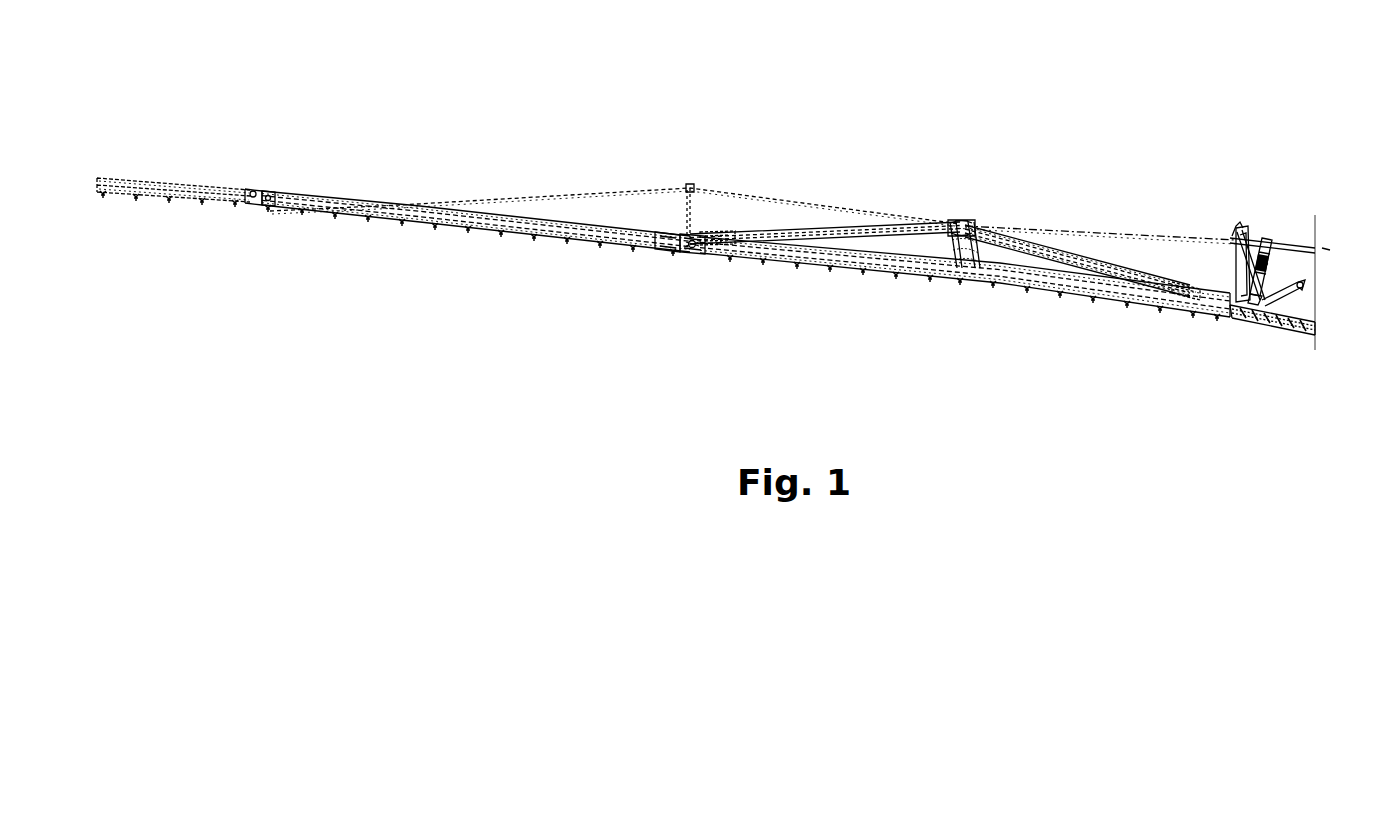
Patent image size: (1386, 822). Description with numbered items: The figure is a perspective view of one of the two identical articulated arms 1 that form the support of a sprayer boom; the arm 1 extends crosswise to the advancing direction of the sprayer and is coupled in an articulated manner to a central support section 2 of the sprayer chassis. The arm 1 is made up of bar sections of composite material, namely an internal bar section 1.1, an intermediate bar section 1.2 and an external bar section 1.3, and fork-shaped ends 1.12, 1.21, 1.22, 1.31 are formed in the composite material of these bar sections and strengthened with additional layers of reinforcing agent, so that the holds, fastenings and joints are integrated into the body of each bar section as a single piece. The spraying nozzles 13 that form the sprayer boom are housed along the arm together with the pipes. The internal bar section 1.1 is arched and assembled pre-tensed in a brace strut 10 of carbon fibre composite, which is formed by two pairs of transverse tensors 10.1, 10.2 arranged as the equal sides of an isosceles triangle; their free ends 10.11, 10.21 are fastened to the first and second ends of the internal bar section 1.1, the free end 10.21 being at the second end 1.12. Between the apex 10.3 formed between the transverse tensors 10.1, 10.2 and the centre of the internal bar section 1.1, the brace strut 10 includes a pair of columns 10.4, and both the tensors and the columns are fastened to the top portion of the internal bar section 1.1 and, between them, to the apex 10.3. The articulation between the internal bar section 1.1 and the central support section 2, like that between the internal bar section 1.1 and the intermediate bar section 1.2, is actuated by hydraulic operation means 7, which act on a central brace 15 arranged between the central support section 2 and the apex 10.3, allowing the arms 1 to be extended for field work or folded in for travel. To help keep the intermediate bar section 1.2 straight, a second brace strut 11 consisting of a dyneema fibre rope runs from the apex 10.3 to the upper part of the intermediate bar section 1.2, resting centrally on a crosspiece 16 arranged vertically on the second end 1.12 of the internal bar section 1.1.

The articulated arm 1 is at (796, 88).
The internal bar section 1.1 is at (1013, 281).
The intermediate bar section 1.2 is at (385, 219).
The external bar section 1.3 is at (121, 186).
The second end of the internal bar section 1.12 is at (691, 248).
The fork-shaped end of the intermediate bar section 1.21 is at (662, 246).
The fork-shaped end of the intermediate bar section 1.22 is at (263, 196).
The fork-shaped end of the external bar section 1.31 is at (240, 193).
The central support section 2 is at (1313, 260).
The hydraulic operation means 7 is at (1268, 240).
The brace strut 10 is at (924, 192).
The transverse tensor 10.1 is at (1063, 248).
The free end of the transverse tensor 10.11 is at (1186, 291).
The transverse tensor 10.2 is at (845, 228).
The free end of the transverse tensor 10.21 is at (728, 230).
The apex 10.3 is at (955, 228).
The column 10.4 is at (968, 252).
The second brace strut 11 is at (558, 193).
The spraying nozzle 13 is at (204, 199).
The central brace 15 is at (1110, 236).
The crosspiece 16 is at (689, 208).